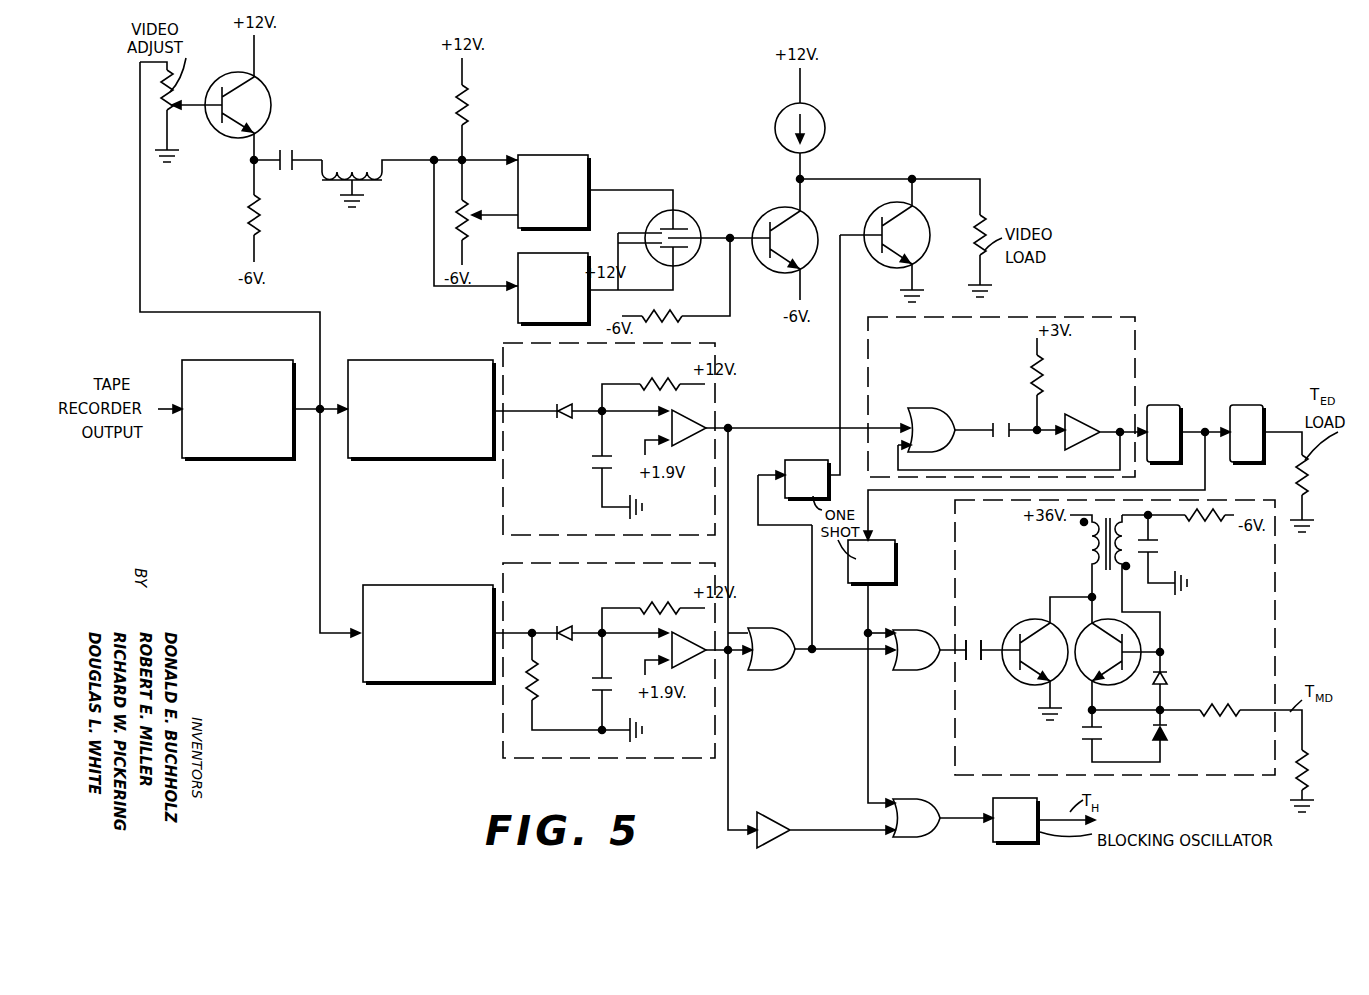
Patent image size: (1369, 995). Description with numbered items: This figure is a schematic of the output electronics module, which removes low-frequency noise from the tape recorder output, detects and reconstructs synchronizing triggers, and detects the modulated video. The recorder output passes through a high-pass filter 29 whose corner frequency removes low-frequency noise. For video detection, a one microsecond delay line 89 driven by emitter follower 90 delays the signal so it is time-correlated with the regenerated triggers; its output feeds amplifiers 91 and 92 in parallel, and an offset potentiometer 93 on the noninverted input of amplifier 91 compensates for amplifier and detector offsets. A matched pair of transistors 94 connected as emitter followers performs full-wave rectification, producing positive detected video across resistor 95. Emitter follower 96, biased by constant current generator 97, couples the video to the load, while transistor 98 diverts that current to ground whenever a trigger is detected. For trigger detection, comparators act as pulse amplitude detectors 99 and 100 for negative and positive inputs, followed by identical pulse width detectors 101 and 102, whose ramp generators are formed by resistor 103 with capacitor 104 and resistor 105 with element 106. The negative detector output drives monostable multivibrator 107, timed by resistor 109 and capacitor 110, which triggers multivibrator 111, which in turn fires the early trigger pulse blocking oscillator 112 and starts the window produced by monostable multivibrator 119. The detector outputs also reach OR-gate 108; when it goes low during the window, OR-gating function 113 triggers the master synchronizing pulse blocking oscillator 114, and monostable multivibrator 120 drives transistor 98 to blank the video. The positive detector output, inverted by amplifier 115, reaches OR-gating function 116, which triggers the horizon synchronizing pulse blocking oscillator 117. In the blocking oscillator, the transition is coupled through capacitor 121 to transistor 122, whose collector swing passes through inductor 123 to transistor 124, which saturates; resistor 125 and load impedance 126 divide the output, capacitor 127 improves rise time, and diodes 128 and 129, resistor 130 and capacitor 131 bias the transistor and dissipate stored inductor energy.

The high-pass filter 29 is at (240, 360).
The delay line 89 is at (342, 168).
The emitter follower 90 is at (266, 100).
The amplifier 91 is at (558, 156).
The amplifier 92 is at (518, 312).
The offset potentiometer 93 is at (468, 208).
The matched pair of transistors 94 is at (688, 216).
The resistor 95 is at (672, 312).
The emitter follower 96 is at (788, 208).
The constant current generator 97 is at (813, 113).
The transistor 98 is at (911, 211).
The negative pulse amplitude detector 99 is at (432, 360).
The positive pulse amplitude detector 100 is at (422, 585).
The negative pulse width detector 101 is at (708, 346).
The positive pulse width detector 102 is at (512, 562).
The resistor 103 is at (672, 383).
The capacitor 104 is at (598, 468).
The resistor 105 is at (645, 606).
The capacitor 106 is at (599, 692).
The monostable multivibrator 107 is at (1112, 318).
The OR-gate 108 is at (766, 669).
The resistor 109 is at (1040, 385).
The capacitor 110 is at (1007, 422).
The multivibrator 111 is at (1160, 404).
The early trigger pulse blocking oscillator 112 is at (1243, 404).
The OR-gating function 113 is at (928, 630).
The master synchronizing pulse blocking oscillator 114 is at (1278, 603).
The amplifier 115 is at (776, 818).
The OR-gating function 116 is at (928, 838).
The horizon synchronizing pulse blocking oscillator 117 is at (1042, 838).
The monostable multivibrator 119 is at (878, 540).
The monostable multivibrator 120 is at (820, 460).
The capacitor 121 is at (967, 662).
The transistor 122 is at (1026, 620).
The inductor 123 is at (1091, 545).
The transistor 124 is at (1136, 634).
The resistor 125 is at (1205, 706).
The load impedance 126 is at (1302, 772).
The capacitor 127 is at (1086, 745).
The diode 128 is at (1187, 731).
The diode 129 is at (1170, 678).
The resistor 130 is at (1206, 520).
The capacitor 131 is at (1158, 561).